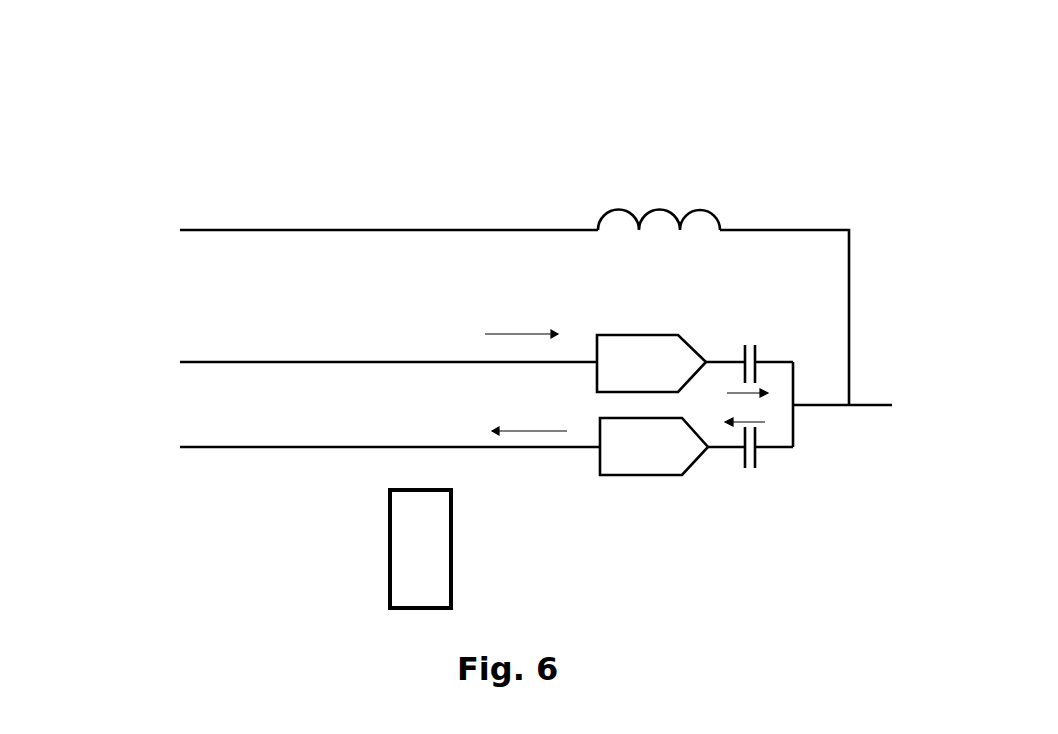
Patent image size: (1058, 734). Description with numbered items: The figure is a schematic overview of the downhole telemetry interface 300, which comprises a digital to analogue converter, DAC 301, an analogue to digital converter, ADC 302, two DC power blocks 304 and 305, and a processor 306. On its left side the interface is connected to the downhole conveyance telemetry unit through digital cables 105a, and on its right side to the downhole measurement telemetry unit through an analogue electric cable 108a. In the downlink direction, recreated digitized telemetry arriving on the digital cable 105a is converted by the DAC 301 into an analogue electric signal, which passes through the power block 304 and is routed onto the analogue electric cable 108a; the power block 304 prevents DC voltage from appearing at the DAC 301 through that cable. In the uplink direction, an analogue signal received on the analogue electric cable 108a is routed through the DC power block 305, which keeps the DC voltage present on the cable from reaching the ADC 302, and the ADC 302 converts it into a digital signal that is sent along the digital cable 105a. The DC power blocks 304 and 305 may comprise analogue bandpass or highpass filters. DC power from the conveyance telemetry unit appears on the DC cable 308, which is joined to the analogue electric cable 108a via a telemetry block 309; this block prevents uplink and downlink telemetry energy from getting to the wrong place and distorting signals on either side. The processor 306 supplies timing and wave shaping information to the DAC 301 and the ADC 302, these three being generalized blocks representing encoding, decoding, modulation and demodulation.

The downhole telemetry interface 300 is at (163, 122).
The DC cable 308 is at (483, 310).
The telemetry block 309 is at (663, 200).
The digital cable 105a is at (168, 335).
The digital to analogue converter (DAC) 301 is at (640, 327).
The analogue to digital converter (ADC) 302 is at (650, 478).
The DC power block 304 is at (752, 340).
The DC power block 305 is at (757, 473).
The analogue electric cable 108a is at (872, 404).
The processor 306 is at (463, 537).